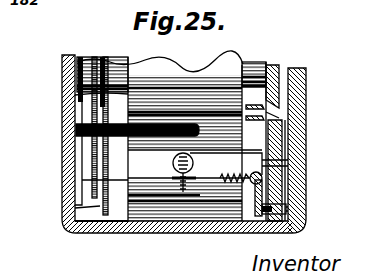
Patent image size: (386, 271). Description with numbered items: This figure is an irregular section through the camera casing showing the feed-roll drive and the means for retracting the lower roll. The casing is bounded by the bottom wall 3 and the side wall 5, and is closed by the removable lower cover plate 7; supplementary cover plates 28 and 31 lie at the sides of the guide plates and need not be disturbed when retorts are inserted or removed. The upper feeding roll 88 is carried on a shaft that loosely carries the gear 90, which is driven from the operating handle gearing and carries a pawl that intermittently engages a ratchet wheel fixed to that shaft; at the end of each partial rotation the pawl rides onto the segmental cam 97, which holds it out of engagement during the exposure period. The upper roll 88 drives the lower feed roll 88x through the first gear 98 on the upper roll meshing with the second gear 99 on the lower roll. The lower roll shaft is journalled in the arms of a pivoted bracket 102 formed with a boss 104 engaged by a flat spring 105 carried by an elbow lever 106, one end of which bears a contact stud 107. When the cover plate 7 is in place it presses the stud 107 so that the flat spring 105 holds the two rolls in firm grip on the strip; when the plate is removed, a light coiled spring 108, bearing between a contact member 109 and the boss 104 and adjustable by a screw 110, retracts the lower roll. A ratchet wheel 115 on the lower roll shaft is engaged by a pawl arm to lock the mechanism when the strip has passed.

The bottom wall 3 is at (240, 233).
The side wall 5 is at (66, 157).
The lower cover plate 7 is at (306, 136).
The supplementary cover plate 28 is at (284, 168).
The supplementary cover plate 31 is at (276, 90).
The upper feeding roll 88 is at (224, 77).
The lower feed roll 88x is at (95, 228).
The gear 90 is at (128, 92).
The segmental cam 97 is at (75, 93).
The first gear 98 is at (107, 58).
The second gear 99 is at (100, 207).
The bracket 102 is at (118, 152).
The boss 104 is at (193, 165).
The flat spring 105 is at (207, 179).
The elbow lever 106 is at (268, 190).
The contact stud 107 is at (286, 208).
The coiled spring 108 is at (140, 186).
The contact member 109 is at (77, 128).
The adjusting screw 110 is at (181, 150).
The ratchet wheel 115 is at (95, 181).